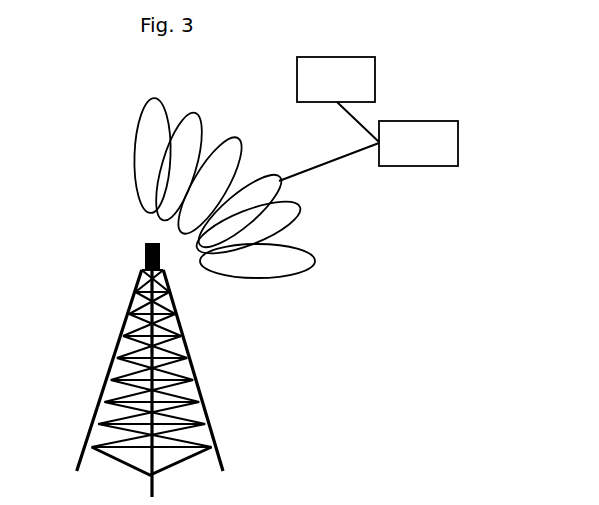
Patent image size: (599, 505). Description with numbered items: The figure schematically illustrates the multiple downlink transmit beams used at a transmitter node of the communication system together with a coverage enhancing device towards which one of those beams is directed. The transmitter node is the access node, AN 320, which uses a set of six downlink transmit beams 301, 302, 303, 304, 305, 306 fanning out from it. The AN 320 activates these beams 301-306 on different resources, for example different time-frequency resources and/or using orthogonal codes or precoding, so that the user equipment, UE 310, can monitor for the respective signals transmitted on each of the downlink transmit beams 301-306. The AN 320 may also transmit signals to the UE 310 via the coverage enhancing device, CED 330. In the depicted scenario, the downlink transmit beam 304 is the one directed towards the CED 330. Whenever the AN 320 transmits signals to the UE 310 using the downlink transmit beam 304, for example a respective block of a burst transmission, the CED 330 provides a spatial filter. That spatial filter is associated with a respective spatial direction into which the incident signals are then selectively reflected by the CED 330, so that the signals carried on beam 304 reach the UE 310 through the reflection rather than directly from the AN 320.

The downlink transmit beam 301 is at (140, 112).
The downlink transmit beam 302 is at (199, 112).
The downlink transmit beam 303 is at (221, 141).
The downlink transmit beam 304 is at (257, 171).
The downlink transmit beam 305 is at (292, 227).
The downlink transmit beam 306 is at (302, 272).
The UE 310 is at (375, 80).
The AN 320 is at (95, 422).
The CED 330 is at (458, 145).